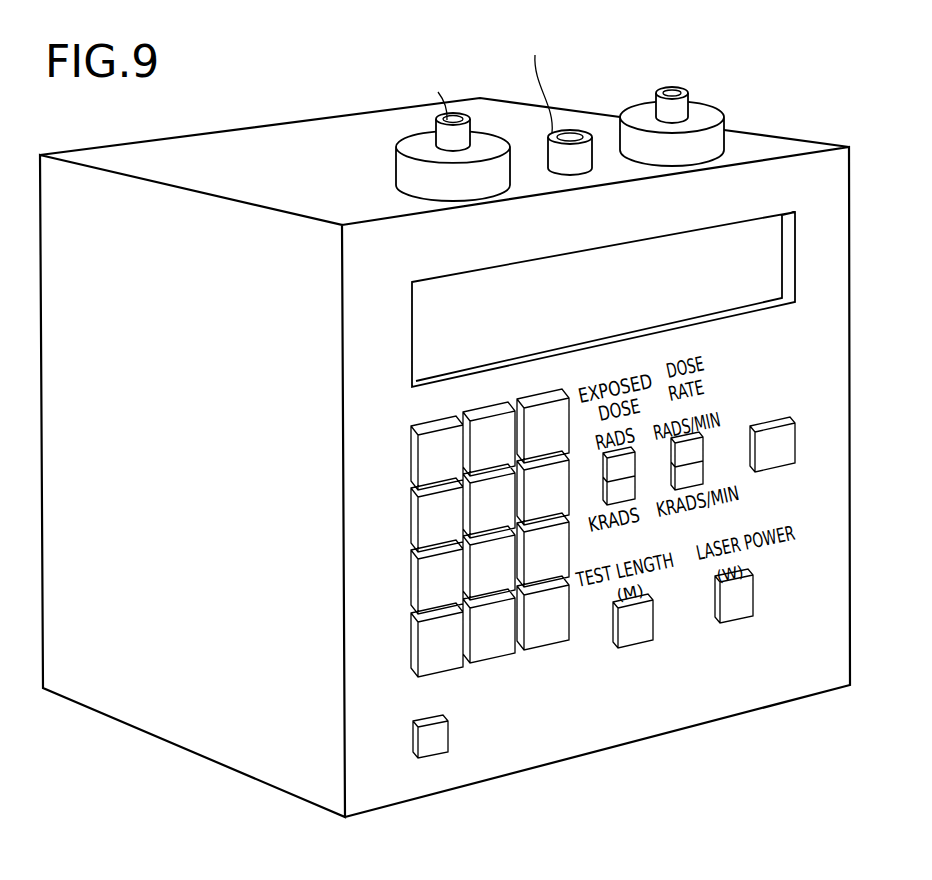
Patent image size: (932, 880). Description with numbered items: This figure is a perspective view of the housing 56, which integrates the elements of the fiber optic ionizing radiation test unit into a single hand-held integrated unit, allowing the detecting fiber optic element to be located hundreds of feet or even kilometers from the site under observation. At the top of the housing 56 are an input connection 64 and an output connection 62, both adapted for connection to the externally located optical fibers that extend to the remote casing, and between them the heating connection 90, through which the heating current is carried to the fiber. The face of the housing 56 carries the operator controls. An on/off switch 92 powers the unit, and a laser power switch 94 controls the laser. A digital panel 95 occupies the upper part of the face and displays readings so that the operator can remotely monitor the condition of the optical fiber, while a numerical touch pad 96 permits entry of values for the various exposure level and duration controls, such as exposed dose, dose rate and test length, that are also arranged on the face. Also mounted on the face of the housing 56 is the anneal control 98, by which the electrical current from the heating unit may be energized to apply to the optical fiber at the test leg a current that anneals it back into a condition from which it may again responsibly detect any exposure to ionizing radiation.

The housing 56 is at (763, 688).
The output connection 62 is at (708, 117).
The input connection 64 is at (420, 137).
The heating connection 90 is at (588, 148).
The on/off switch 92 is at (428, 747).
The laser power switch 94 is at (740, 599).
The digital panel 95 is at (778, 268).
The numerical touch pad 96 is at (430, 588).
The control 98 is at (780, 445).